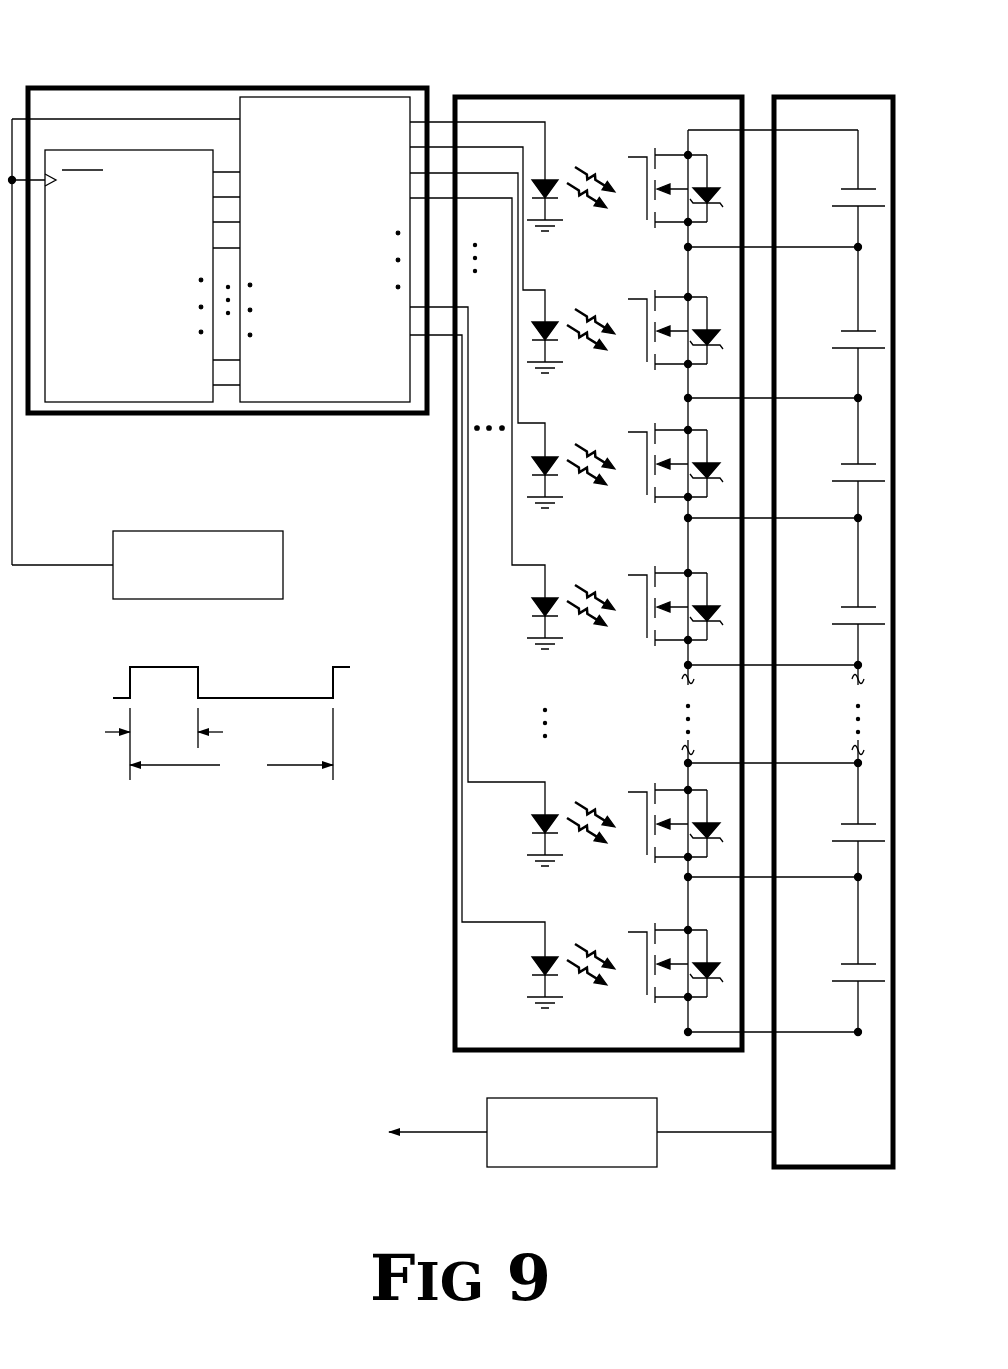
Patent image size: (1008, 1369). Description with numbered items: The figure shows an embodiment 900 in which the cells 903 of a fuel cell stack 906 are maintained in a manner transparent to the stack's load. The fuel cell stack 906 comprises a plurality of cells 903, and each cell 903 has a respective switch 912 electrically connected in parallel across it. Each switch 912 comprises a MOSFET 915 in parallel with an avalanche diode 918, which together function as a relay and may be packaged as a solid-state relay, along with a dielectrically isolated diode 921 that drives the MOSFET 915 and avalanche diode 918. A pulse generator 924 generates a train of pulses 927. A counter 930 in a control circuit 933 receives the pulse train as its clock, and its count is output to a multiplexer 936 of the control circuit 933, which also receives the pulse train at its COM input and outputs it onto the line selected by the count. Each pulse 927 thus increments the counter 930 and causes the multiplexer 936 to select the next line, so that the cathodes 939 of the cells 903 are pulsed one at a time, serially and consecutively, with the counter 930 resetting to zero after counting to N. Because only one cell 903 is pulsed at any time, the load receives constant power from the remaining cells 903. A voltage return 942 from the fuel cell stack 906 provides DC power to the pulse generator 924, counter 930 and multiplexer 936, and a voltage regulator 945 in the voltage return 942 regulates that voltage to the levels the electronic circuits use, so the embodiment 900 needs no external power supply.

The embodiment 900 is at (130, 14).
The control circuit 933 is at (232, 88).
The counter 930 is at (128, 402).
The multiplexer 936 is at (325, 402).
The pulse generator 924 is at (200, 531).
The pulse 927 is at (106, 638).
The voltage return 942 is at (560, 573).
The switch 912 is at (645, 552).
The MOSFET 915 is at (638, 167).
The avalanche diode 918 is at (697, 205).
The dielectrically isolated diode 921 is at (558, 199).
The fuel cell stack 906 is at (828, 96).
The cell 903 is at (852, 961).
The cathode 939 is at (842, 981).
The voltage regulator 945 is at (573, 1167).